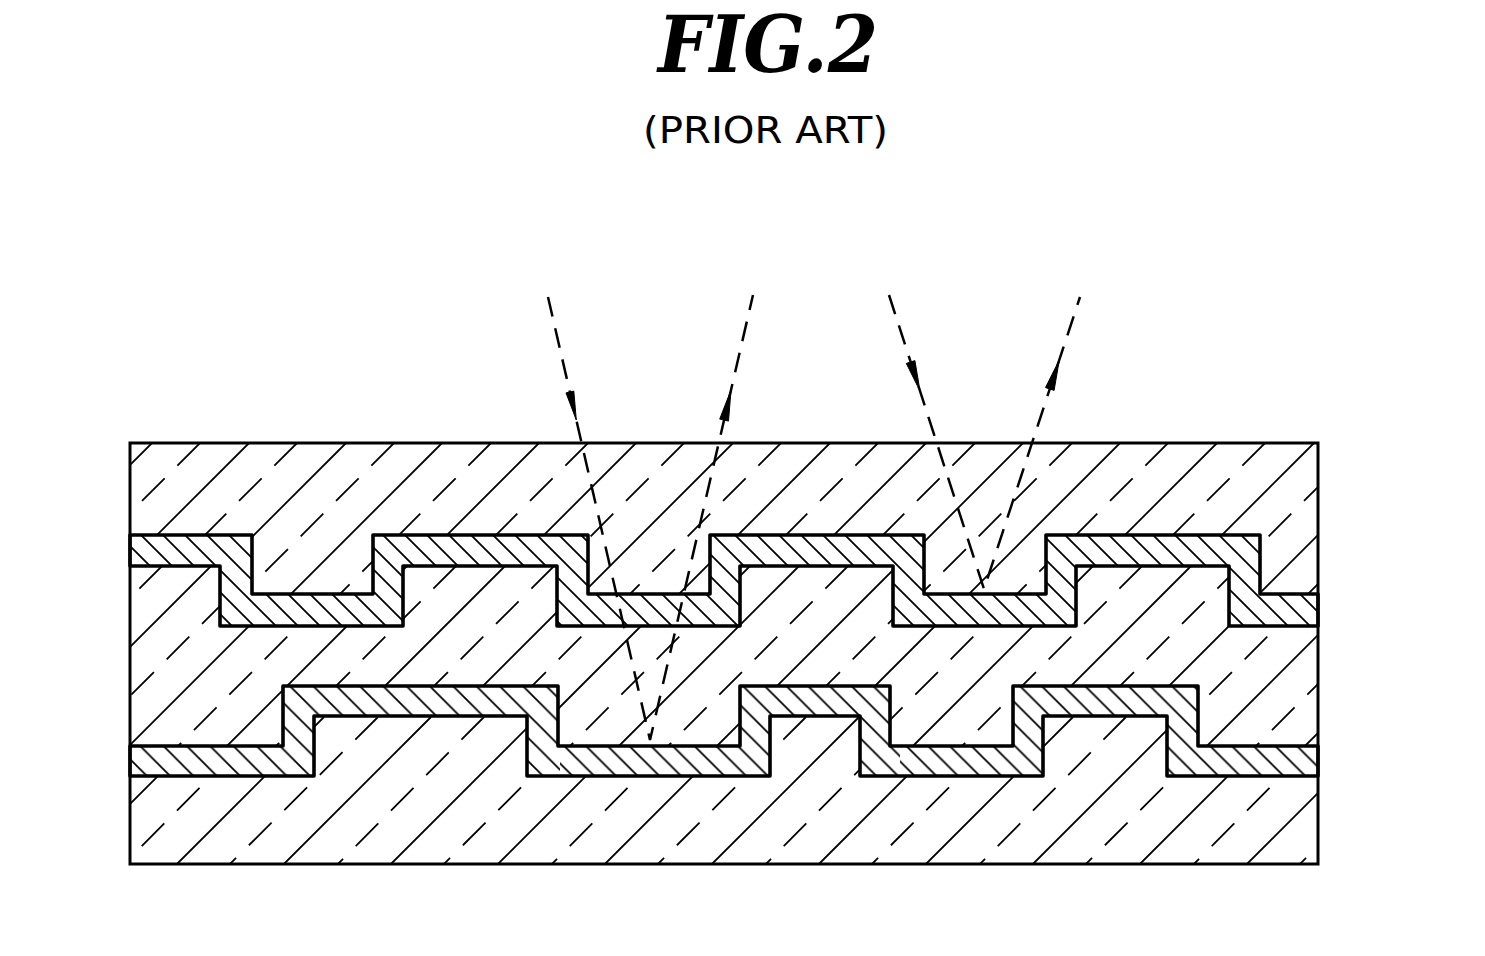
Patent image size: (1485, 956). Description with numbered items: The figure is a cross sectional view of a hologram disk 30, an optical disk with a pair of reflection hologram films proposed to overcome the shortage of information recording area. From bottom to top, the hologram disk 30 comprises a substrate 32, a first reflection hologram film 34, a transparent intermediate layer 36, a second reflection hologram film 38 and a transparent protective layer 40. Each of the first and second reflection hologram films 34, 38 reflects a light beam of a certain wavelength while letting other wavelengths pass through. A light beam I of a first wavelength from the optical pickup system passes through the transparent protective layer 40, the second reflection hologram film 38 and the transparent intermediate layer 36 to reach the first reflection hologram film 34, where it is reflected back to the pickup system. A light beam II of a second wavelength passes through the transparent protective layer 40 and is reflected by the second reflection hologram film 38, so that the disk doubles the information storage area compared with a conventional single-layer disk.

The hologram disk 30 is at (1250, 218).
The substrate 32 is at (1295, 827).
The first reflection hologram film 34 is at (1308, 757).
The transparent intermediate layer 36 is at (1295, 680).
The second reflection hologram film 38 is at (1310, 608).
The transparent protective layer 40 is at (1290, 503).
The light beam I is at (517, 305).
The light beam II is at (1113, 307).